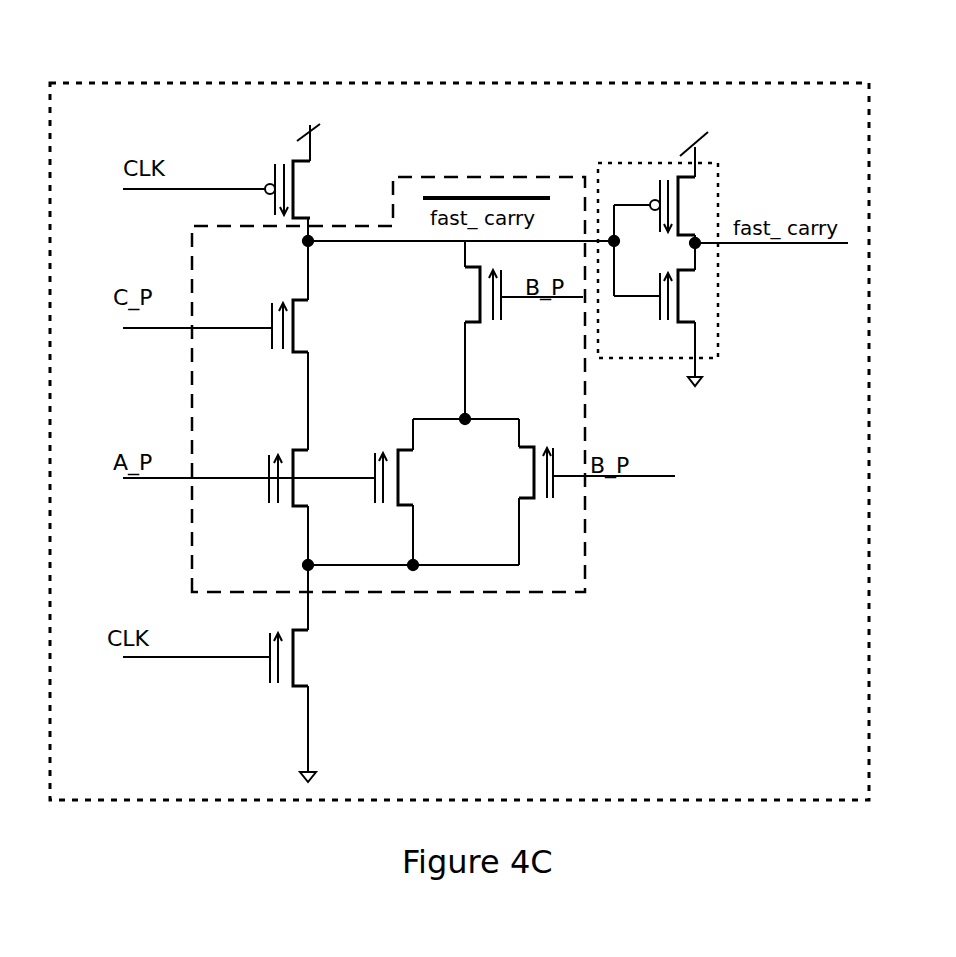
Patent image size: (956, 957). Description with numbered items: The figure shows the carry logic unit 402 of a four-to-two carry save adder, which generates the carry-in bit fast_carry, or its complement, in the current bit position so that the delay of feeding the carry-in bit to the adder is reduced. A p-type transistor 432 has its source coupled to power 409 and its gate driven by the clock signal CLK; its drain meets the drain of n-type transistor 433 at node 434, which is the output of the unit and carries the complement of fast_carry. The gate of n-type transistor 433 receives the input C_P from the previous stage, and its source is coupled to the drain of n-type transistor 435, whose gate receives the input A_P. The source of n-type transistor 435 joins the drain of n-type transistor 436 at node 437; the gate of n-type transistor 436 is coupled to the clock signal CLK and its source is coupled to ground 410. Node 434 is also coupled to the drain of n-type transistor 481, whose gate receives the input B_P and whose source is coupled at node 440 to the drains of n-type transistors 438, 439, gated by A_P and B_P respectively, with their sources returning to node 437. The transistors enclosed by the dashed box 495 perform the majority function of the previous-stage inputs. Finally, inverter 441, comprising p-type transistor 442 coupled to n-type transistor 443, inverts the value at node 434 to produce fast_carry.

The carry logic unit 402 is at (487, 84).
The power 409 is at (313, 128).
The ground 410 is at (315, 771).
The p-type transistor 432 is at (293, 200).
The n-type transistor 433 is at (293, 318).
The node 434 is at (313, 245).
The n-type transistor 435 is at (298, 468).
The n-type transistor 436 is at (296, 660).
The node 437 is at (314, 560).
The n-type transistor 438 is at (403, 483).
The n-type transistor 439 is at (535, 478).
The node 440 is at (471, 414).
The inverter 441 is at (717, 162).
The p-type transistor 442 is at (678, 205).
The n-type transistor 443 is at (683, 292).
The n-type transistor 481 is at (477, 290).
The box 495 is at (507, 597).